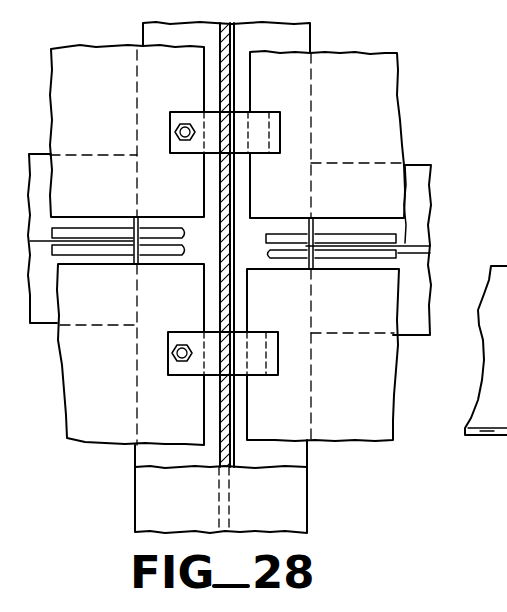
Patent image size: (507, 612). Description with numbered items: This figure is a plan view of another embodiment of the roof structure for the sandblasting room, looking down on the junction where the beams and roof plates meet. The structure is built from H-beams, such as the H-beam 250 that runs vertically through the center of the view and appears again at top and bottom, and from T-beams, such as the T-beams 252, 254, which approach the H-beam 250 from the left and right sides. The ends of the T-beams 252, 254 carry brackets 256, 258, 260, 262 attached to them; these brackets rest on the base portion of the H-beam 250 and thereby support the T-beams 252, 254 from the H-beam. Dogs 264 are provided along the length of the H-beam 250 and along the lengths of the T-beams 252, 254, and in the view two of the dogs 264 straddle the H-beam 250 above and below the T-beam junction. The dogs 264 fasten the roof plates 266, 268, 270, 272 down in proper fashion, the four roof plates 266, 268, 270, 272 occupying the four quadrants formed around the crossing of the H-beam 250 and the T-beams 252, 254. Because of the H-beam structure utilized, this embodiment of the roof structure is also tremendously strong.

The H-beam 250 is at (310, 25).
The T-beam 252 is at (42, 304).
The T-beam 254 is at (420, 202).
The bracket 256 is at (110, 254).
The bracket 258 is at (96, 228).
The bracket 260 is at (350, 258).
The bracket 262 is at (342, 234).
The dog 264 is at (257, 118).
The roof plate 266 is at (122, 409).
The roof plate 268 is at (370, 414).
The roof plate 270 is at (105, 105).
The roof plate 272 is at (371, 104).